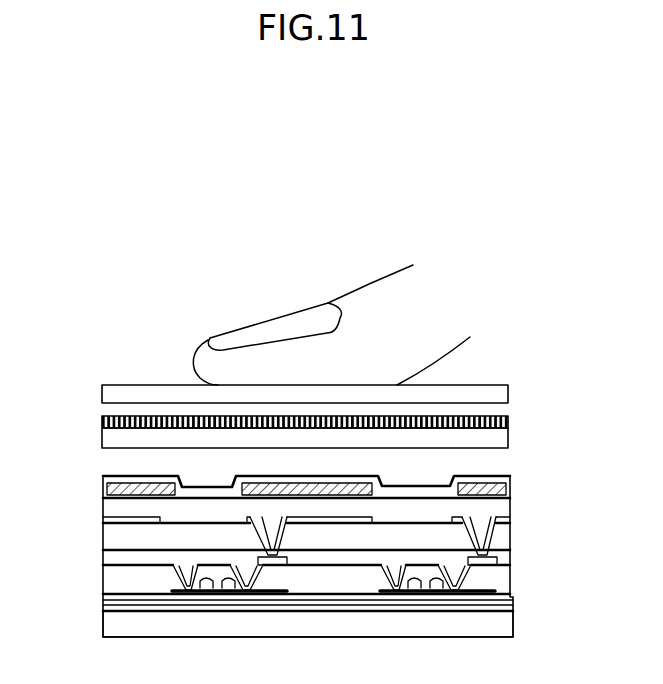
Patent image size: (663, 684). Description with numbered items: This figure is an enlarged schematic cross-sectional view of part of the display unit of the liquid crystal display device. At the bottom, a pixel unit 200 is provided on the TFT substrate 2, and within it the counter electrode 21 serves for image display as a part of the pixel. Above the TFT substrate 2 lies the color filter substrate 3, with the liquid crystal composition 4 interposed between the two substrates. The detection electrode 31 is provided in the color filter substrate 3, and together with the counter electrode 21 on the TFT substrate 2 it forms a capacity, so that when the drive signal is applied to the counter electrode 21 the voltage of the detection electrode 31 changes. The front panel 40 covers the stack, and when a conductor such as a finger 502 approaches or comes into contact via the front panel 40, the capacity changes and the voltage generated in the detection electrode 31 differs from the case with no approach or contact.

The TFT substrate 2 is at (335, 616).
The color filter substrate 3 is at (512, 440).
The liquid crystal composition 4 is at (502, 463).
The counter electrode 21 is at (103, 486).
The detection electrode 31 is at (512, 421).
The front panel 40 is at (512, 385).
The pixel unit 200 is at (312, 546).
The finger 502 is at (228, 333).